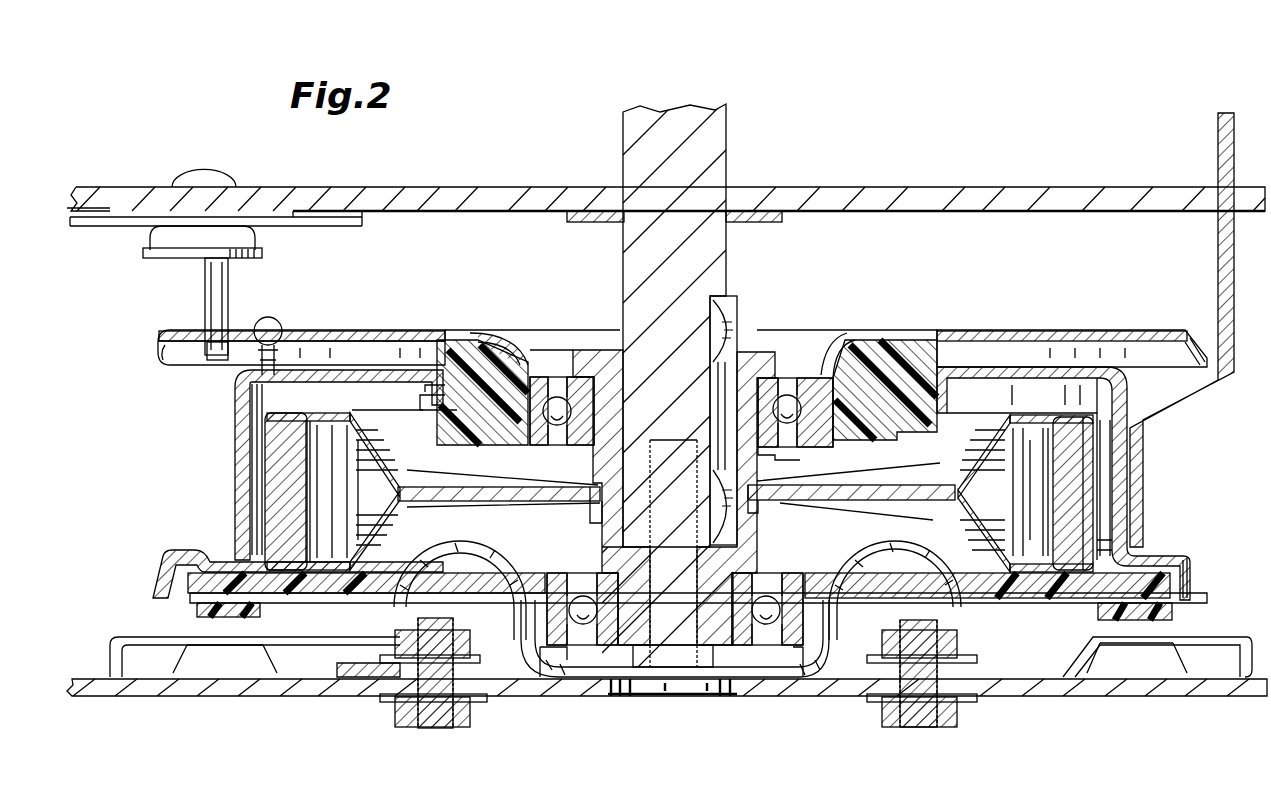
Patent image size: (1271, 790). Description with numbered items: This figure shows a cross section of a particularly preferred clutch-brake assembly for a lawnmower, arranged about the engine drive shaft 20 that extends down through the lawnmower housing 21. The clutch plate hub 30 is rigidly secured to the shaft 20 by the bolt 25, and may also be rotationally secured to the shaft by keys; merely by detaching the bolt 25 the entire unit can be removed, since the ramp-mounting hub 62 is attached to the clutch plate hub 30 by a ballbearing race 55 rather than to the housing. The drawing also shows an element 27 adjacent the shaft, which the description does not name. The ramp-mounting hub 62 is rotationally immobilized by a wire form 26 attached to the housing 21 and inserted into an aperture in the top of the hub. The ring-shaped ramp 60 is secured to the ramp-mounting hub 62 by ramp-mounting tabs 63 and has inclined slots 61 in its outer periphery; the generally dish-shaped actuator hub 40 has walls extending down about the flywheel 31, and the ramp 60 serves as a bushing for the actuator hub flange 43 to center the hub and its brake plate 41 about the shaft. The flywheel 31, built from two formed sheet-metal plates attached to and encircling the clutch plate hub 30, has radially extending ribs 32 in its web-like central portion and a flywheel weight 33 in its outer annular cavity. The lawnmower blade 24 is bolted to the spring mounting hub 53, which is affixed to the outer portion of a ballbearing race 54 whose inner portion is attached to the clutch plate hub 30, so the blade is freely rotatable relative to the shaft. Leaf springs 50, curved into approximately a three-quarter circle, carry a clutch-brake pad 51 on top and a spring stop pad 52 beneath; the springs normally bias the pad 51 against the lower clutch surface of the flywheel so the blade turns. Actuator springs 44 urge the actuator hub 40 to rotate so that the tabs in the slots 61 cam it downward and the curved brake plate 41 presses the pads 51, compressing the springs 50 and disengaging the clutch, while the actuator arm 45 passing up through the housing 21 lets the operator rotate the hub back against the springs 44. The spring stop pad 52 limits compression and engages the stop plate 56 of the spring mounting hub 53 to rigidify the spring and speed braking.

The drive shaft 20 is at (684, 244).
The lawnmower housing 21 is at (938, 188).
The lawnmower blade 24 is at (292, 698).
The bolt 25 is at (712, 665).
The wire form 26 is at (236, 294).
The spring washer 27 is at (742, 322).
The clutch plate hub 30 is at (620, 431).
The flywheel 31 is at (474, 465).
The radially extending ribs 32 is at (436, 470).
The flywheel weight 33 is at (299, 497).
The actuator hub 40 is at (1127, 384).
The brake plate 41 is at (1138, 558).
The actuator hub flange 43 is at (949, 392).
The actuator spring 44 is at (292, 345).
The actuator arm 45 is at (1238, 320).
The leaf spring 50 is at (510, 584).
The clutch-brake pad 51 is at (1100, 595).
The spring stop pad 52 is at (1174, 614).
The spring mounting hub 53 is at (162, 655).
The ballbearing race 54 is at (570, 647).
The ballbearing race 55 is at (768, 458).
The stop plate 56 is at (1108, 637).
The ring-shaped ramp 60 is at (482, 396).
The inclined slots 61 is at (432, 345).
The ramp-mounting hub 62 is at (352, 345).
The ramp-mounting tabs 63 is at (468, 429).